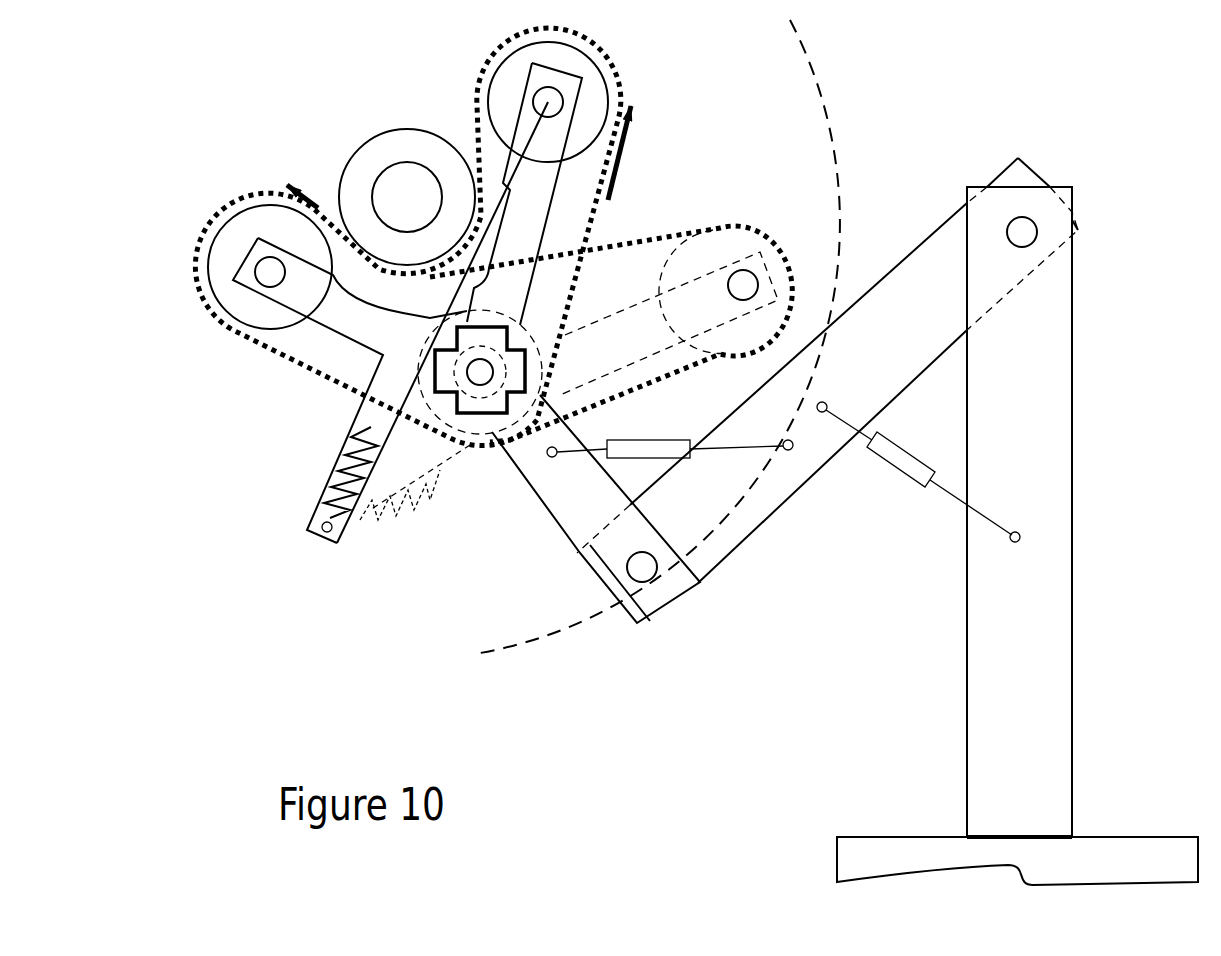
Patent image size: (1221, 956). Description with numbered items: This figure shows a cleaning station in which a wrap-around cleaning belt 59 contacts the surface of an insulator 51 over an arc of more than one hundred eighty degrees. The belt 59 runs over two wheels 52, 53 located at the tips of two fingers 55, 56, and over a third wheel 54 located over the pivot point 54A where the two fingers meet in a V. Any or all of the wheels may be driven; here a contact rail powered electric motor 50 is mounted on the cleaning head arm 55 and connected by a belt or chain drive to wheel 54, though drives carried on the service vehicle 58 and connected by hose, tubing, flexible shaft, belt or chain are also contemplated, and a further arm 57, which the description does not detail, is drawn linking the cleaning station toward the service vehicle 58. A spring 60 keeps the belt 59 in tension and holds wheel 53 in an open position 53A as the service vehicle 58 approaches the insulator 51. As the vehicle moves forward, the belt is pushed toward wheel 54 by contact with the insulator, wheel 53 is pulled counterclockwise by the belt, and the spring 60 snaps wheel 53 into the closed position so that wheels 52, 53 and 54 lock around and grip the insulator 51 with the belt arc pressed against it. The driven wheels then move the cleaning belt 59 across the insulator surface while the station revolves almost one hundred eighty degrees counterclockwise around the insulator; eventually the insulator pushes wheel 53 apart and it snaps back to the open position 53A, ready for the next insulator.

The electric motor 50 is at (495, 415).
The insulator 51 is at (362, 143).
The wheel 52 is at (255, 305).
The wheel 53 is at (568, 55).
The open position of wheel 53 53A is at (758, 273).
The wheel 54 is at (418, 397).
The pivot point 54A is at (483, 374).
The finger / cleaning head arm 55 is at (550, 503).
The finger 56 is at (528, 225).
The arm 57 is at (805, 482).
The service vehicle 58 is at (832, 840).
The cleaning belt 59 is at (300, 373).
The spring 60 is at (330, 508).